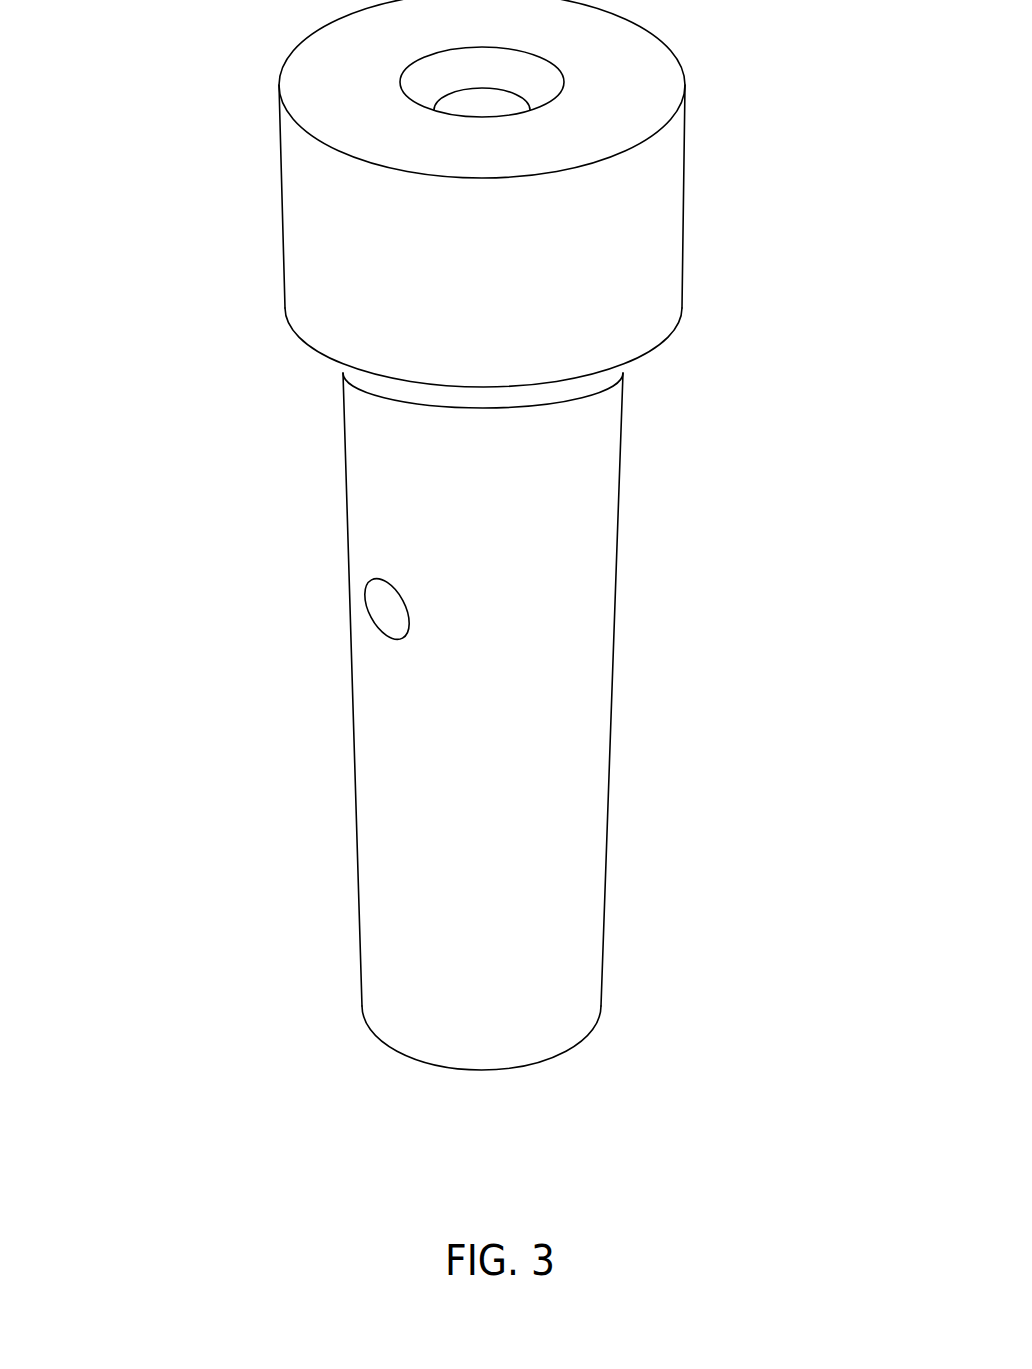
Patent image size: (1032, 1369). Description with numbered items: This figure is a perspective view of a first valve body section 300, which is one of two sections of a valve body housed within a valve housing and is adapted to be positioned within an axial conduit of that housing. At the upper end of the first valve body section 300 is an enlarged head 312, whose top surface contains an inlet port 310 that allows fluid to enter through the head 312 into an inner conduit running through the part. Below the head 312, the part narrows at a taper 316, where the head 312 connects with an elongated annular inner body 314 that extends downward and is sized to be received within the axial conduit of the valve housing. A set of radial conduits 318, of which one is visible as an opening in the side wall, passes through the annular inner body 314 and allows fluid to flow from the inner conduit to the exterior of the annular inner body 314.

The first valve body section 300 is at (110, 96).
The inlet port 310 is at (525, 82).
The head 312 is at (323, 236).
The annular inner body 314 is at (533, 824).
The taper 316 is at (580, 383).
The radial conduits 318 is at (380, 608).